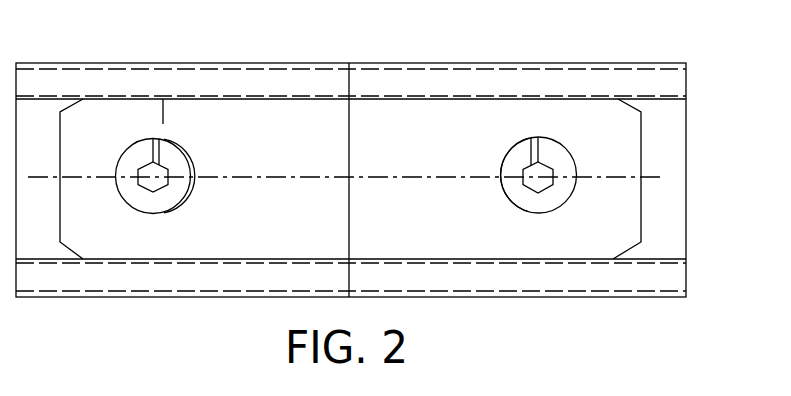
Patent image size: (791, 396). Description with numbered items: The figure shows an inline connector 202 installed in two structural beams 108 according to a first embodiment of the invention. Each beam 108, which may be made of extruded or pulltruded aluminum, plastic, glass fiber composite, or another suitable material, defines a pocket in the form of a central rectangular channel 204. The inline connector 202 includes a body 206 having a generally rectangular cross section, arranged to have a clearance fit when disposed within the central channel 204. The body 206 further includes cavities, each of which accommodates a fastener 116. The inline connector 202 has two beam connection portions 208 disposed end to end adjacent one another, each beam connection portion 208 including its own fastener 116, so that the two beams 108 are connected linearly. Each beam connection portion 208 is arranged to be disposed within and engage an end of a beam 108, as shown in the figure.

The beam 108 is at (260, 82).
The fastener 116 is at (150, 200).
The inline connector 202 is at (618, 150).
The central rectangular channel 204 is at (665, 227).
The body 206 is at (605, 88).
The beam connection portion 208 is at (208, 233).